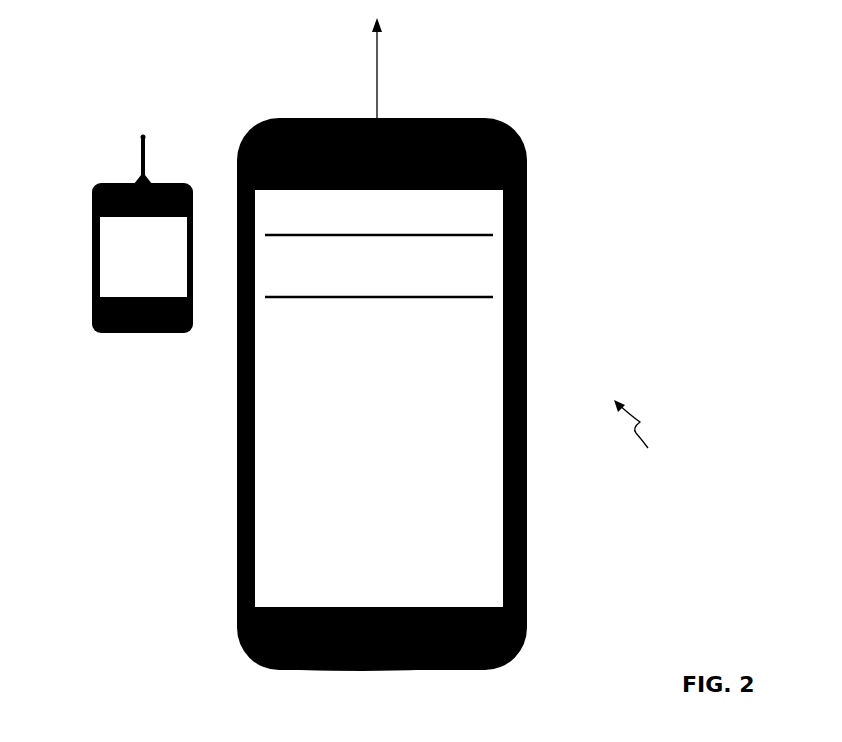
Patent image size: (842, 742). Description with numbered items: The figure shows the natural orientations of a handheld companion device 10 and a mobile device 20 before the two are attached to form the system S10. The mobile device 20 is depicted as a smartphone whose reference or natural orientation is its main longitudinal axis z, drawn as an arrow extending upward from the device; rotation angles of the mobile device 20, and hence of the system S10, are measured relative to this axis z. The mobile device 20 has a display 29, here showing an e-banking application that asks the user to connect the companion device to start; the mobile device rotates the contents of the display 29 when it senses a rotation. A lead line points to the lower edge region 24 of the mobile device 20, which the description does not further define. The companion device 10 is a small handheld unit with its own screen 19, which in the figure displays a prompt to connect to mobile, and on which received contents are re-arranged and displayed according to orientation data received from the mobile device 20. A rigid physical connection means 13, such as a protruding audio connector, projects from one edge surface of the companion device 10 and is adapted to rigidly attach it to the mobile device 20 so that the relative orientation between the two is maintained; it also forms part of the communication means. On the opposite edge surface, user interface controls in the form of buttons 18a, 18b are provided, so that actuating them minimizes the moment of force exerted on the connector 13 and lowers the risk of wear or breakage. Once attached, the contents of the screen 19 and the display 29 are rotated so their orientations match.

The handheld companion device 10 is at (87, 220).
The rigid physical connection means 13 is at (153, 157).
The screen 19 is at (92, 295).
The button 18a is at (130, 338).
The button 18b is at (165, 340).
The mobile device 20 is at (213, 650).
The bottom edge / connector port of mobile device 24 is at (450, 676).
The display 29 is at (287, 525).
The main longitudinal axis z is at (377, 72).
The system S10 is at (644, 438).